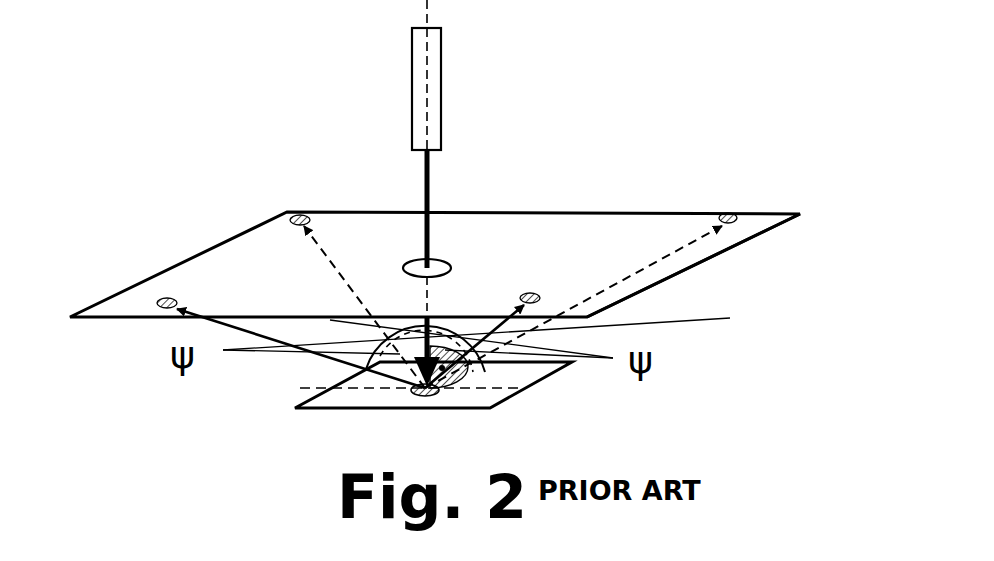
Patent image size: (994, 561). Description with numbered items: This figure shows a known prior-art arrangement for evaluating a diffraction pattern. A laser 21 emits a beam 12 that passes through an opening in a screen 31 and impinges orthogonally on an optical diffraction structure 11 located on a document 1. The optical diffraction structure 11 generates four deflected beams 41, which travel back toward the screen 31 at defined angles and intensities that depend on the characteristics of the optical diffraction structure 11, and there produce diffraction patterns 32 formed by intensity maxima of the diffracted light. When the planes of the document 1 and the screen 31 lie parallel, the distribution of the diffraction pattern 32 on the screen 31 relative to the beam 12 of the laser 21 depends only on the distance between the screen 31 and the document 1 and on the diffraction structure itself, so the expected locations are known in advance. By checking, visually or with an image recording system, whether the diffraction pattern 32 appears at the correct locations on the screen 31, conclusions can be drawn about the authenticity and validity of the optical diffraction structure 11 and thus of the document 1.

The document 1 is at (538, 393).
The optical diffraction structure 11 is at (410, 391).
The laser beam axis 12 is at (430, 10).
The laser 21 is at (415, 85).
The screen 31 is at (235, 250).
The diffraction patterns 32 is at (172, 300).
The deflected beams 41 is at (650, 267).